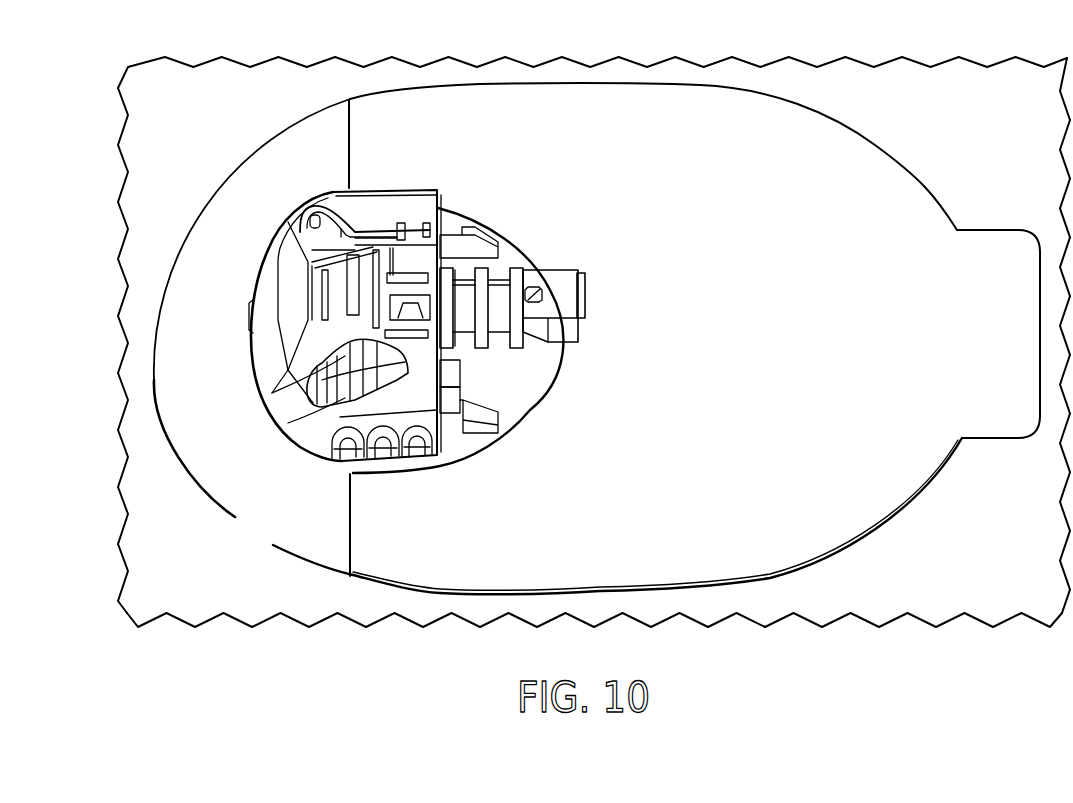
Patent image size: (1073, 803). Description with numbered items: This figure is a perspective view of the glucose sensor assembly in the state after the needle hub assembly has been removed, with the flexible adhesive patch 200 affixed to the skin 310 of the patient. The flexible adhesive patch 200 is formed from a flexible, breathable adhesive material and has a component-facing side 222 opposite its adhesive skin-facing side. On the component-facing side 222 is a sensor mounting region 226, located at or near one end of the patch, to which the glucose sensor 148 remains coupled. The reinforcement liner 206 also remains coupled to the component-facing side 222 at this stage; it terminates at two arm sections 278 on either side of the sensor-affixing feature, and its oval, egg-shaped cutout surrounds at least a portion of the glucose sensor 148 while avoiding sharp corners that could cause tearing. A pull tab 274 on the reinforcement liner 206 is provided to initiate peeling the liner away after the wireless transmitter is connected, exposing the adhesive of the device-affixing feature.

The flexible adhesive patch 200 is at (223, 190).
The glucose sensor 148 is at (332, 200).
The arm sections 278 is at (416, 150).
The reinforcement liner 206 is at (566, 161).
The pull tab 274 is at (1013, 228).
The component-facing side 222 is at (533, 375).
The sensor mounting region 226 is at (328, 466).
The skin 310 is at (800, 594).